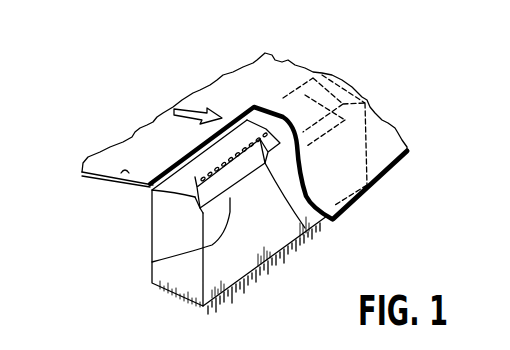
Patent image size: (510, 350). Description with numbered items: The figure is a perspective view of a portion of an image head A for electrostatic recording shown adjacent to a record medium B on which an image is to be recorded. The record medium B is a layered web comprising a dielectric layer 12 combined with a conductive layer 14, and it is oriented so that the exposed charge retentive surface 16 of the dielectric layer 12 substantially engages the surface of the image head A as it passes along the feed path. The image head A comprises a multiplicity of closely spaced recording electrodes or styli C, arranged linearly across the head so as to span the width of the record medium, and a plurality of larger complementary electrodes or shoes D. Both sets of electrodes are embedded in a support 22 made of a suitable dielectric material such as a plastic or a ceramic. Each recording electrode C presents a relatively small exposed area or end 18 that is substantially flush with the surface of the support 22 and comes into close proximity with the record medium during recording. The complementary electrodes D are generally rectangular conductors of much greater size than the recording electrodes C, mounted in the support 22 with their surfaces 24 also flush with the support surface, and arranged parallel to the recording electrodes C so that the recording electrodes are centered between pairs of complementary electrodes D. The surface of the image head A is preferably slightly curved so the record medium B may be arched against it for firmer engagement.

The conductive layer 14 is at (165, 118).
The dielectric layer 12 is at (82, 176).
The charge retentive surface 16 is at (115, 174).
The exposed end area of recording electrode 18 is at (212, 201).
The support 22 is at (308, 231).
The complementary electrode surface 24 is at (152, 262).
The image head A is at (160, 296).
The record medium B is at (338, 68).
The recording electrodes C is at (182, 165).
The complementary electrodes D is at (195, 201).